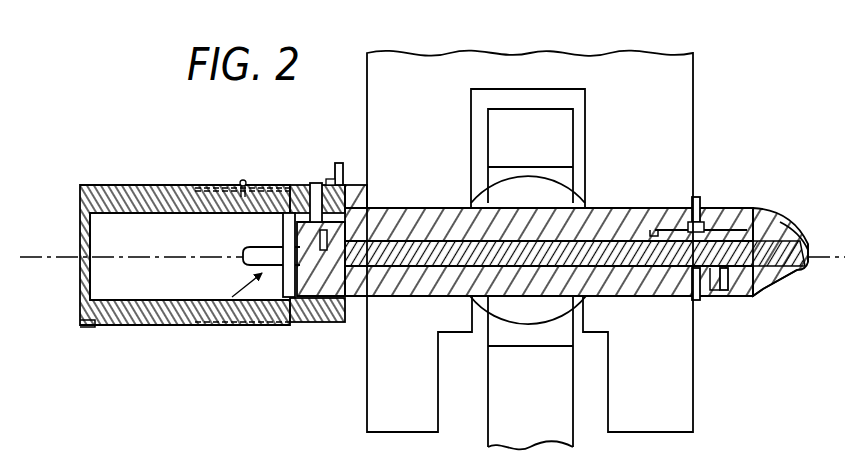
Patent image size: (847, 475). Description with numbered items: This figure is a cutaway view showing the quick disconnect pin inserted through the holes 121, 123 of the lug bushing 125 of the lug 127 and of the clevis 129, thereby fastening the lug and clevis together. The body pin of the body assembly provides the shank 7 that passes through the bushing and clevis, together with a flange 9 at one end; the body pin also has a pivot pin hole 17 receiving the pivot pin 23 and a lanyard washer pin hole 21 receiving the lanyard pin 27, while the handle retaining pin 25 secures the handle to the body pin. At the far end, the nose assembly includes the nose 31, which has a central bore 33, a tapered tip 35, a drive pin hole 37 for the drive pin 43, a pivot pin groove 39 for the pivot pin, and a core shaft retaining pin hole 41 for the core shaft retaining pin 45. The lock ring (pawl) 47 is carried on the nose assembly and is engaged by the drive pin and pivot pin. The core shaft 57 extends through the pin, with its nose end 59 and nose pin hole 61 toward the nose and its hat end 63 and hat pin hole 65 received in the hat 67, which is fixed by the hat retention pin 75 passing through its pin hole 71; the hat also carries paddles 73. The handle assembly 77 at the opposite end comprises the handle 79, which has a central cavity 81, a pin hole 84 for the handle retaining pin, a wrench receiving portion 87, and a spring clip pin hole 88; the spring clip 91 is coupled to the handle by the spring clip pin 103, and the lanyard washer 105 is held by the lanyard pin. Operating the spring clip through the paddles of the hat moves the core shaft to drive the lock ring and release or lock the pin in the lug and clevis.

The shank 7 is at (613, 208).
The flange 9 is at (353, 323).
The pivot pin hole 17 is at (675, 296).
The lanyard washer pin hole 21 is at (364, 184).
The pivot pin 23 is at (696, 300).
The handle retaining pin 25 is at (310, 176).
The lanyard pin 27 is at (339, 163).
The nose 31 is at (758, 287).
The central bore 33 is at (787, 278).
The tapered tip 35 is at (770, 210).
The drive pin hole 37 is at (706, 215).
The pivot pin groove 39 is at (720, 289).
The core shaft retaining pin hole 41 is at (728, 291).
The drive pin 43 is at (706, 226).
The core shaft retaining pin 45 is at (735, 297).
The lock ring (pawl) 47 is at (696, 197).
The core shaft 57 is at (800, 220).
The nose end 59 is at (812, 240).
The nose pin hole 61 is at (806, 268).
The hat end 63 is at (303, 325).
The hat pin hole 65 is at (323, 323).
The hat 67 is at (217, 327).
The pin hole 71 is at (368, 206).
The paddles 73 is at (243, 254).
The hat retention pin 75 is at (272, 325).
The handle assembly 77 is at (114, 140).
The handle 79 is at (80, 315).
The central cavity 81 is at (88, 220).
The pin hole 84 is at (313, 183).
The wrench receiving portion 87 is at (100, 327).
The spring clip pin hole 88 is at (232, 185).
The spring clip 91 is at (238, 324).
The spring clip pin 103 is at (243, 180).
The lanyard washer 105 is at (332, 180).
The hole 121 is at (490, 300).
The hole 123 is at (375, 300).
The lug bushing 125 is at (557, 318).
The lug 127 is at (540, 430).
The clevis 129 is at (670, 405).